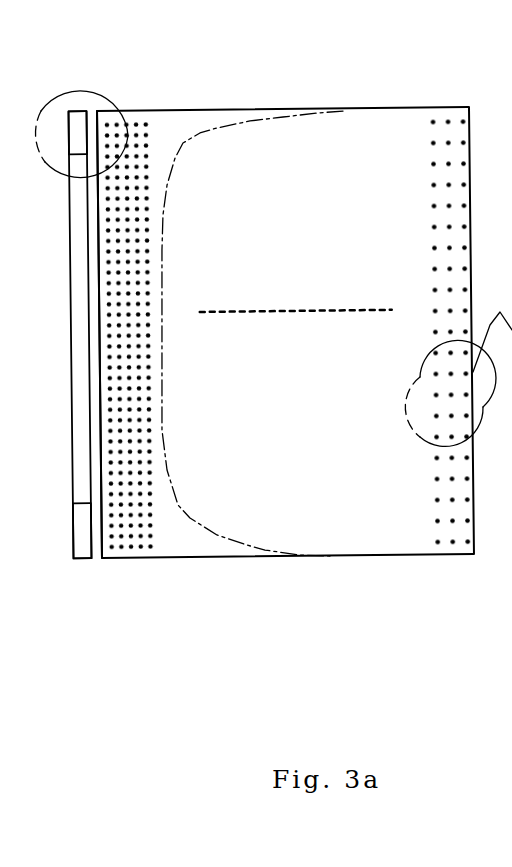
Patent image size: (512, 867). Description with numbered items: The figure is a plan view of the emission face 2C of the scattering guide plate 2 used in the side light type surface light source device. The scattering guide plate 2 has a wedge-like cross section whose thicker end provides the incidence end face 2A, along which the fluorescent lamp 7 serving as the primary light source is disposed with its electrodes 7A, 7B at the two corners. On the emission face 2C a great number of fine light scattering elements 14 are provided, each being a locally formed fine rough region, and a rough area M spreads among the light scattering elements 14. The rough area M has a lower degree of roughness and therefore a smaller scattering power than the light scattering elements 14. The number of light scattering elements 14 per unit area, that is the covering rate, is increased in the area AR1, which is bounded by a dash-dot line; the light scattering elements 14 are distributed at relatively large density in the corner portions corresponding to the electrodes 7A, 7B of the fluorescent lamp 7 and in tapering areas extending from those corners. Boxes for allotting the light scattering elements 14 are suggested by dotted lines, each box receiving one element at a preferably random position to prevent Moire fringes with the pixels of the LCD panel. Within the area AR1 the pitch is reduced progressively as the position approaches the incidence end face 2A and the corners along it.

The scattering guide plate 2 is at (285, 377).
The incidence end face 2A is at (55, 334).
The emission face 2C is at (134, 383).
The light scattering elements 14 is at (445, 379).
The area of increased covering rate AR1 is at (253, 300).
The fluorescent lamp 7 is at (46, 334).
The electrode of the fluorescent lamp 7A is at (124, 98).
The electrode of the fluorescent lamp 7B is at (69, 575).
The rough area M is at (64, 376).